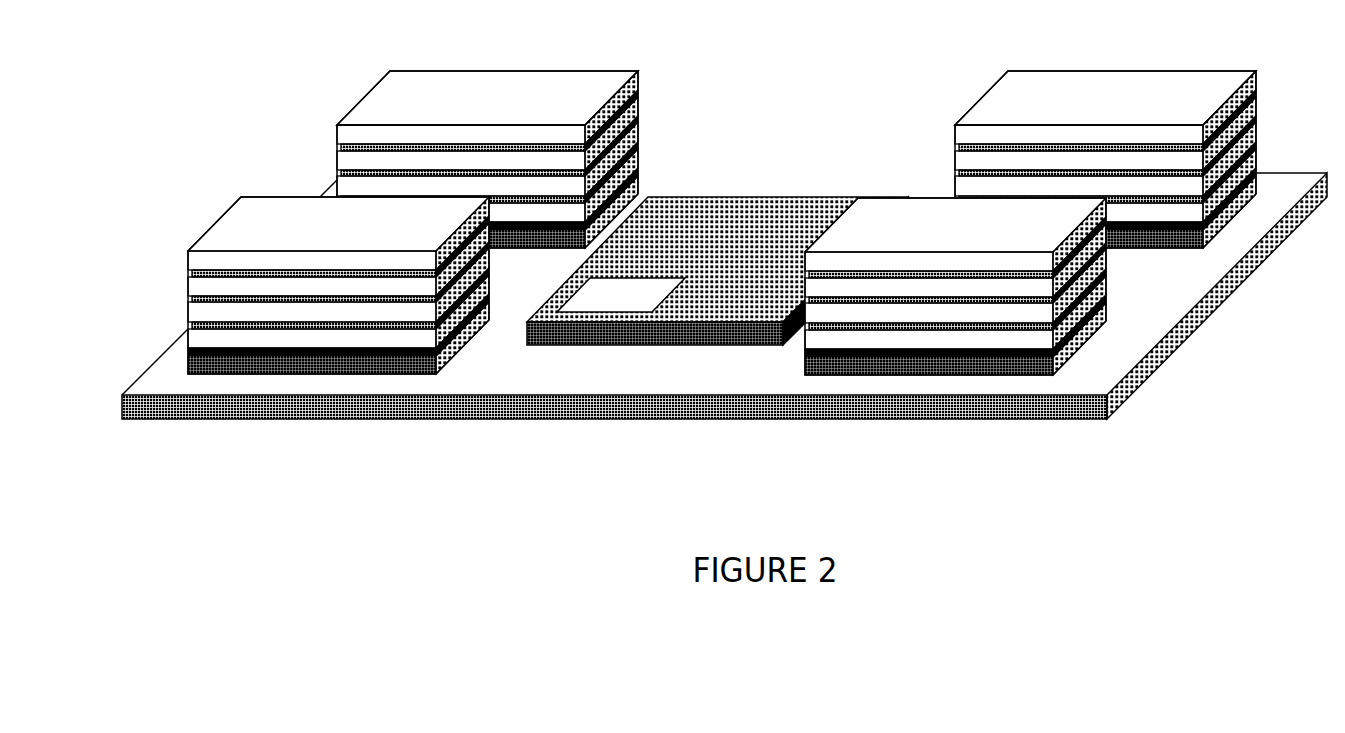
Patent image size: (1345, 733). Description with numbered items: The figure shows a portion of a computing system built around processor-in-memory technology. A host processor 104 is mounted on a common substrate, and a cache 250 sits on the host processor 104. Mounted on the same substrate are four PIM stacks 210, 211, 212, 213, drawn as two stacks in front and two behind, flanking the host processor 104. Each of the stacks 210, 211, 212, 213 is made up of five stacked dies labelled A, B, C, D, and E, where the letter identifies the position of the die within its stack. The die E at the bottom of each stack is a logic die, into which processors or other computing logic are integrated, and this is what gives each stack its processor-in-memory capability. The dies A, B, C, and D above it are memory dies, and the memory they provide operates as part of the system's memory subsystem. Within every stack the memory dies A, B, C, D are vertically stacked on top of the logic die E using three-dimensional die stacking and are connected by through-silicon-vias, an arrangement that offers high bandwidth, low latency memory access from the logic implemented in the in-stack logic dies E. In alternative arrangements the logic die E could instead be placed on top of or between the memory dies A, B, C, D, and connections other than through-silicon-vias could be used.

The host processor 104 is at (701, 260).
The cache 250 is at (604, 305).
The PIM stack 210 is at (178, 252).
The PIM stack 211 is at (597, 127).
The PIM stack 212 is at (783, 252).
The PIM stack 213 is at (1217, 127).
The memory die A is at (1070, 136).
The memory die B is at (1096, 161).
The memory die C is at (1124, 187).
The memory die D is at (1152, 212).
The logic die E is at (1180, 237).